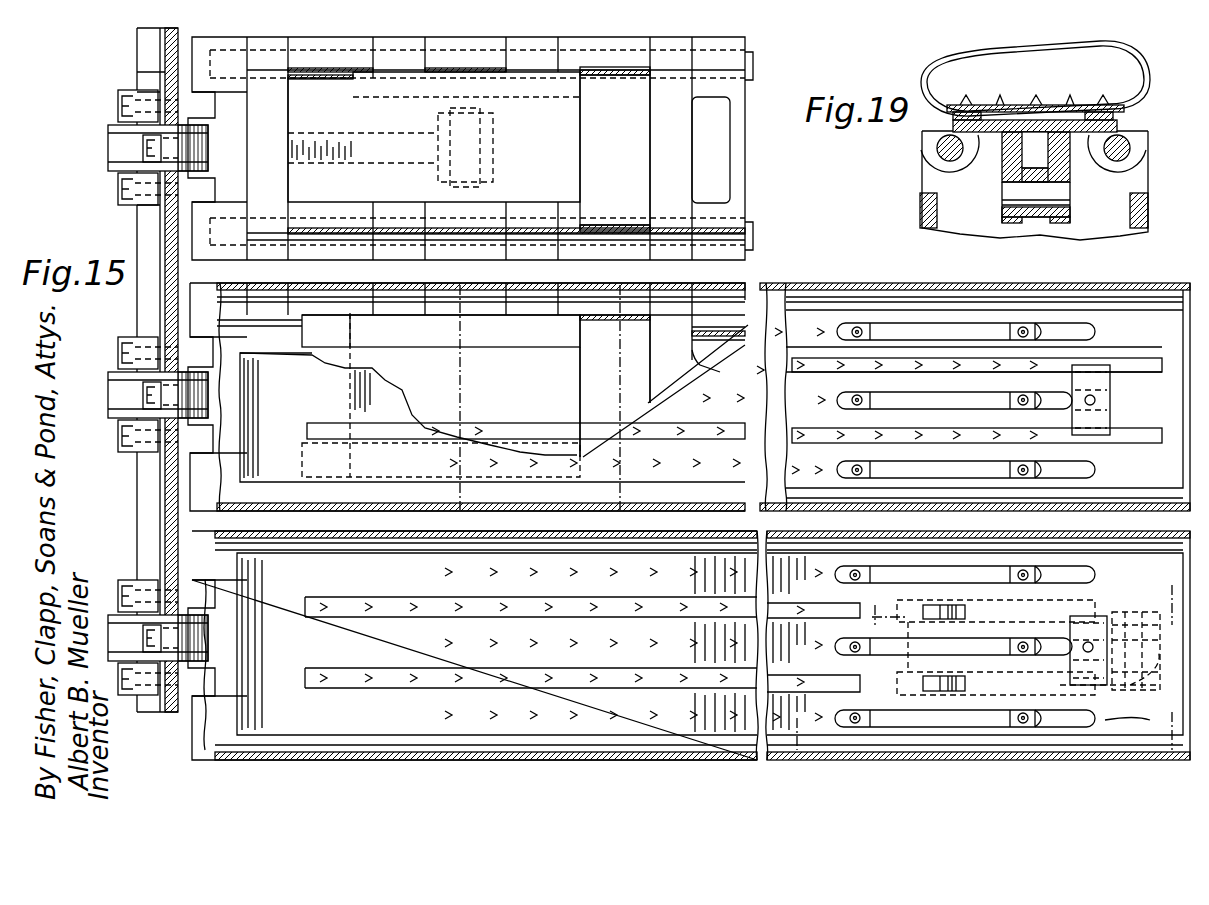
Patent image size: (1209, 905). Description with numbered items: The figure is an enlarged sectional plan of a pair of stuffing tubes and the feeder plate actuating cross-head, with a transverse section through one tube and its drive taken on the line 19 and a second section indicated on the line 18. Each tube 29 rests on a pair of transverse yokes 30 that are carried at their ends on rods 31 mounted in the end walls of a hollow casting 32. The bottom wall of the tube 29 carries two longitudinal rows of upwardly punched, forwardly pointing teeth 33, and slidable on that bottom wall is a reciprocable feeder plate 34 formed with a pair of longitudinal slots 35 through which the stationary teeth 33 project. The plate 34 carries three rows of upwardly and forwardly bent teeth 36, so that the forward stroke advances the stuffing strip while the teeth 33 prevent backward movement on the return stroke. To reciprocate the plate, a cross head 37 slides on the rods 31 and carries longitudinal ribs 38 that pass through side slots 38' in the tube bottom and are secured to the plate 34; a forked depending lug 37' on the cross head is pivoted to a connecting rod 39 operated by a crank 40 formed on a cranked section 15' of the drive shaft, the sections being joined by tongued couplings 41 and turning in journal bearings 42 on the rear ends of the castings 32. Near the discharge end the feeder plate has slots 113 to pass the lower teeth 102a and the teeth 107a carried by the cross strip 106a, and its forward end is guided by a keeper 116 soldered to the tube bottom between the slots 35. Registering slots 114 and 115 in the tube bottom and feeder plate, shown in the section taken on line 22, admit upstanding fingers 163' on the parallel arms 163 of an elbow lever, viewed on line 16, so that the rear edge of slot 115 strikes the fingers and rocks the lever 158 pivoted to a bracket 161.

In FIG. 15, the tongued coupling 41 is at (137, 40).
In FIG. 15, the journal bearing 42 is at (118, 100).
In FIG. 15, the crank 40 is at (108, 166).
In FIG. 15, the cranked section 15' is at (123, 428).
In FIG. 15, the transverse yoke 30 is at (275, 178).
In FIG. 15, the longitudinal rib 38 is at (422, 274).
In FIG. 19, the longitudinal rib 38 is at (1038, 123).
In FIG. 15, the longitudinal side slot 38' is at (398, 421).
In FIG. 15, the connecting rod 39 is at (312, 147).
In FIG. 19, the connecting rod 39 is at (1030, 223).
In FIG. 15, the cross head 37 is at (607, 262).
In FIG. 19, the cross head 37 is at (1070, 133).
In FIG. 15, the forked depending lug 37' is at (484, 147).
In FIG. 19, the forked depending lug 37' is at (1061, 216).
In FIG. 15, the rod 31 is at (611, 72).
In FIG. 19, the rod 31 is at (937, 148).
In FIG. 15, the hollow casting 32 is at (740, 168).
In FIG. 19, the hollow casting 32 is at (928, 184).
In FIG. 15, the tube 29 is at (300, 287).
In FIG. 19, the tube 29 is at (1135, 36).
In FIG. 15, the section line 19— 19 is at (482, 276).
In FIG. 15, the section line 18— 18 is at (642, 276).
In FIG. 15, the feeder plate 34 is at (1143, 277).
In FIG. 19, the feeder plate 34 is at (1130, 106).
In FIG. 15, the longitudinal slot 35 is at (318, 423).
In FIG. 15, the tooth 33 is at (688, 420).
In FIG. 19, the tooth 33 is at (1000, 97).
In FIG. 15, the tooth 36 is at (718, 404).
In FIG. 19, the tooth 36 is at (966, 97).
In FIG. 15, the slot 113 is at (945, 468).
In FIG. 15, the tooth 102a is at (858, 465).
In FIG. 15, the tooth 107a is at (1022, 327).
In FIG. 15, the cross strip 106a is at (1040, 327).
In FIG. 15, the keeper 116 is at (1100, 378).
In FIG. 15, the slot 115 is at (1085, 602).
In FIG. 15, the slot 114 is at (908, 672).
In FIG. 15, the upstanding finger 163' is at (966, 620).
In FIG. 15, the parallel arm 163 is at (998, 736).
In FIG. 15, the bracket 161 is at (1140, 687).
In FIG. 15, the lever 158 is at (1095, 722).
In FIG. 15, the section line 22— 22 is at (880, 618).
In FIG. 15, the section line 16— 16 is at (797, 722).